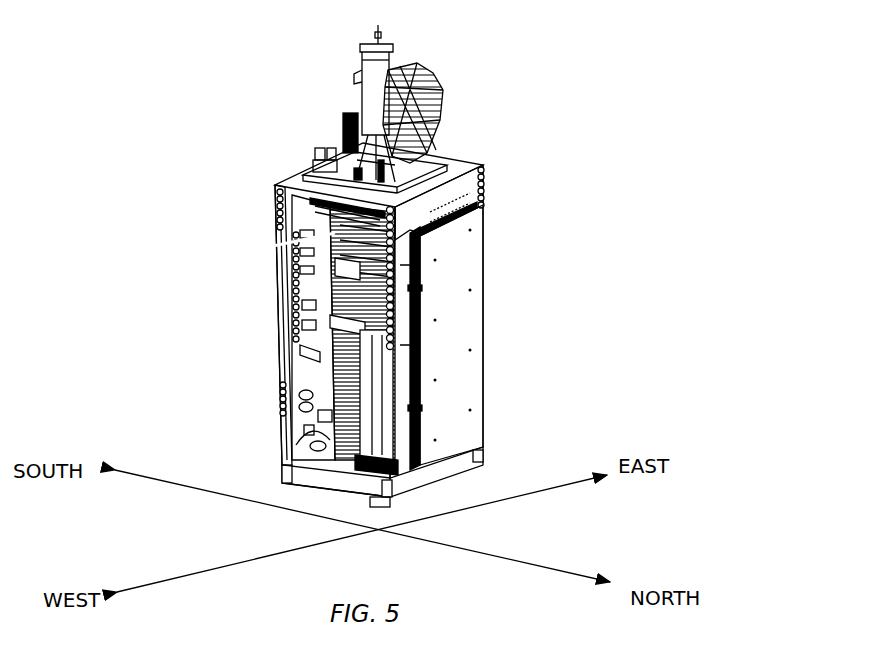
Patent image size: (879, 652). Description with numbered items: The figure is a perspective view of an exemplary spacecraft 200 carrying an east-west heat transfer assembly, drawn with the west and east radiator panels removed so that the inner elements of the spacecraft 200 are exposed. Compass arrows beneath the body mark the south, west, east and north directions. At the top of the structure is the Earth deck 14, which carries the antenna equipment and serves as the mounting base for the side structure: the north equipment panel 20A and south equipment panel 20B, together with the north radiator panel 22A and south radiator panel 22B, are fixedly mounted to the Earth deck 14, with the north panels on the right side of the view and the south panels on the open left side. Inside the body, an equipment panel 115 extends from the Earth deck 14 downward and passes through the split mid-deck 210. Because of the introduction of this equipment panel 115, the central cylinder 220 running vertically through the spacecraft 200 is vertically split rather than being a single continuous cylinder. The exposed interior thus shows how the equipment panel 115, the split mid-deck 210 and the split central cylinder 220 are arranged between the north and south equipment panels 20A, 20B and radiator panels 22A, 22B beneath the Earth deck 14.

The spacecraft 200 is at (312, 62).
The Earth deck 14 is at (347, 207).
The north equipment panel 20A is at (460, 195).
The north radiator panel 22A is at (472, 230).
The equipment panel 115 is at (365, 240).
The south radiator panel 22B is at (275, 298).
The split mid-deck 210 is at (338, 275).
The south equipment panel 20B is at (293, 410).
The central cylinder 220 is at (373, 406).